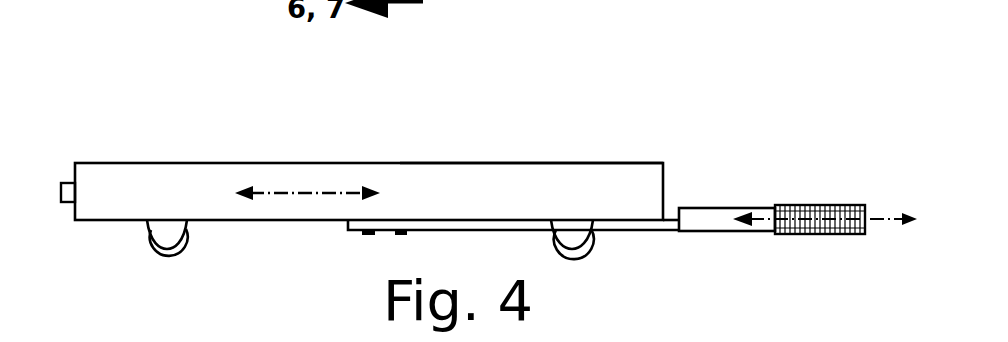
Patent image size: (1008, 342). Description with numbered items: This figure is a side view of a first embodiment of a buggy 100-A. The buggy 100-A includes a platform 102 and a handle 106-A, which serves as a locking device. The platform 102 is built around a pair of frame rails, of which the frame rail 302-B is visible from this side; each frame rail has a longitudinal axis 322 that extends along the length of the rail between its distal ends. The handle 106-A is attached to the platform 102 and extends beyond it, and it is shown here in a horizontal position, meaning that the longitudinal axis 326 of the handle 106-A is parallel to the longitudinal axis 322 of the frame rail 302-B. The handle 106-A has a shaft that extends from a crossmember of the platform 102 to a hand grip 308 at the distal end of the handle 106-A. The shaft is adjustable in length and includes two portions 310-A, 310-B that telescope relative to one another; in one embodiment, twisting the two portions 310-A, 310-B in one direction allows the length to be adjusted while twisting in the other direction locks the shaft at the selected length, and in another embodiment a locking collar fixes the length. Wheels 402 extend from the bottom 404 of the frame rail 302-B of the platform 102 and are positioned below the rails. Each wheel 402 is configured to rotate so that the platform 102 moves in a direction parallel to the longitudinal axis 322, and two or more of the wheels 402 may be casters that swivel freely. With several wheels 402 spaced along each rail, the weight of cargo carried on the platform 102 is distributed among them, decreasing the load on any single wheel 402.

The buggy 100-A is at (795, 62).
The platform 102 is at (505, 164).
The handle 106-A is at (737, 208).
The frame rail 302-B is at (163, 164).
The hand grip 308 is at (847, 237).
The shaft portion 310-A is at (740, 233).
The shaft portion 310-B is at (615, 229).
The longitudinal axis 322 is at (308, 193).
The longitudinal axis 326 is at (886, 217).
The wheels 402 is at (147, 243).
The bottom 404 is at (267, 221).